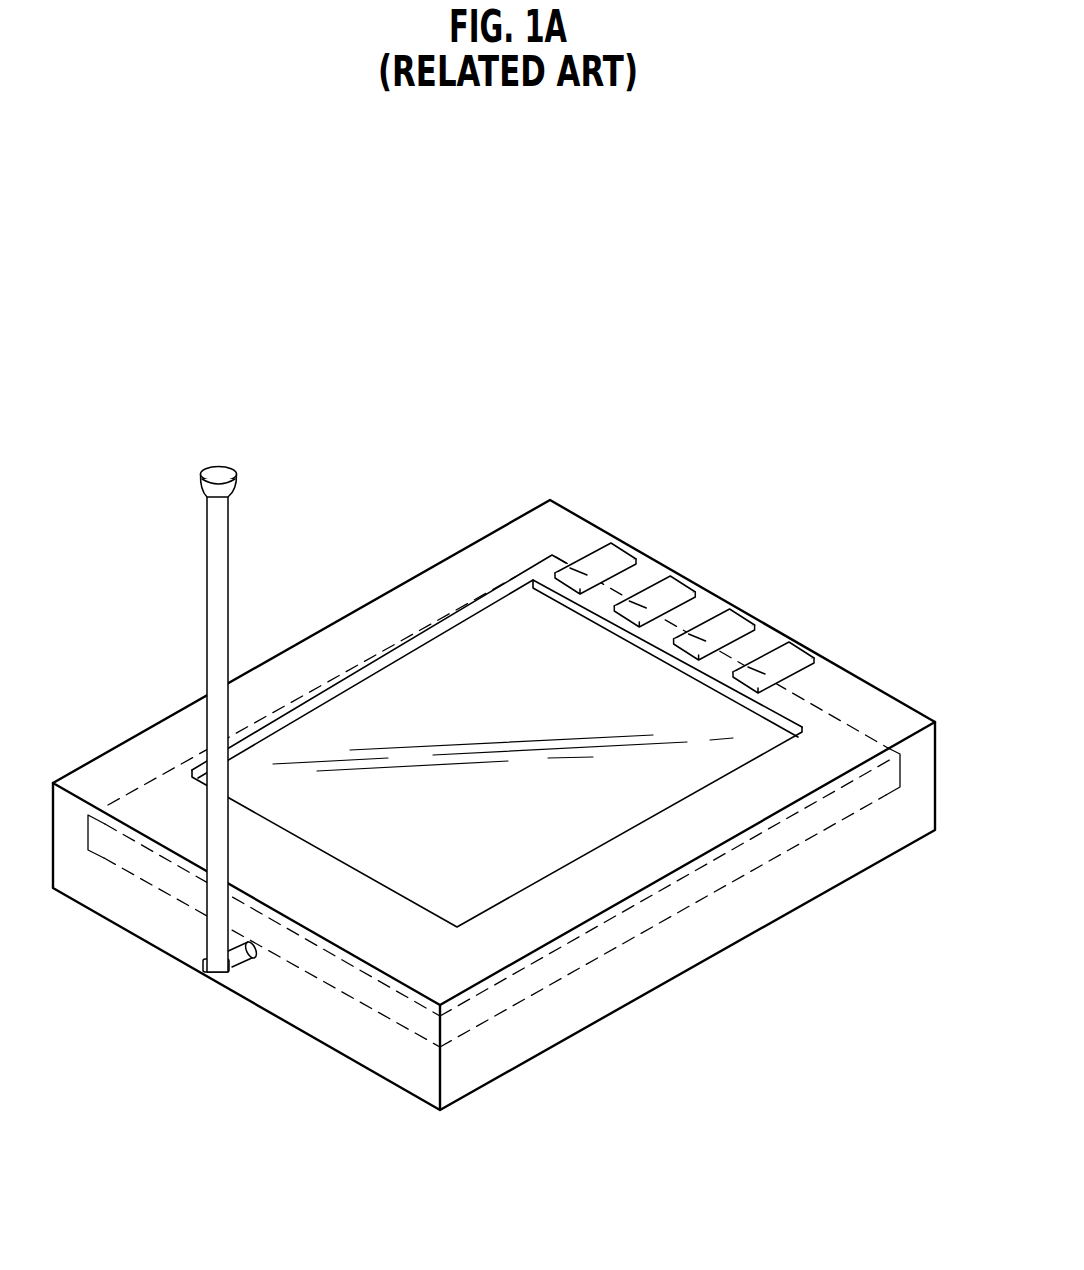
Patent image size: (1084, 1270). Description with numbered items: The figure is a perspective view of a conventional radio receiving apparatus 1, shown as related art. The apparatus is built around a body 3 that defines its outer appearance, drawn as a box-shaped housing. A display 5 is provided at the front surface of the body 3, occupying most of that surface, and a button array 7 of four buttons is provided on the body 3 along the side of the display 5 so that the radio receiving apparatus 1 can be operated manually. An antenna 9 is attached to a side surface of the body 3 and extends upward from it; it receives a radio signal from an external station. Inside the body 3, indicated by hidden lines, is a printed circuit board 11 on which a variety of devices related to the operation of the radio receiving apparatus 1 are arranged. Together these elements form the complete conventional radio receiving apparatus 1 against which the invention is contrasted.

The radio receiving apparatus 1 is at (606, 361).
The body 3 is at (484, 514).
The display 5 is at (432, 673).
The button array 7 is at (807, 657).
The antenna 9 is at (222, 522).
The printed circuit board 11 is at (345, 977).